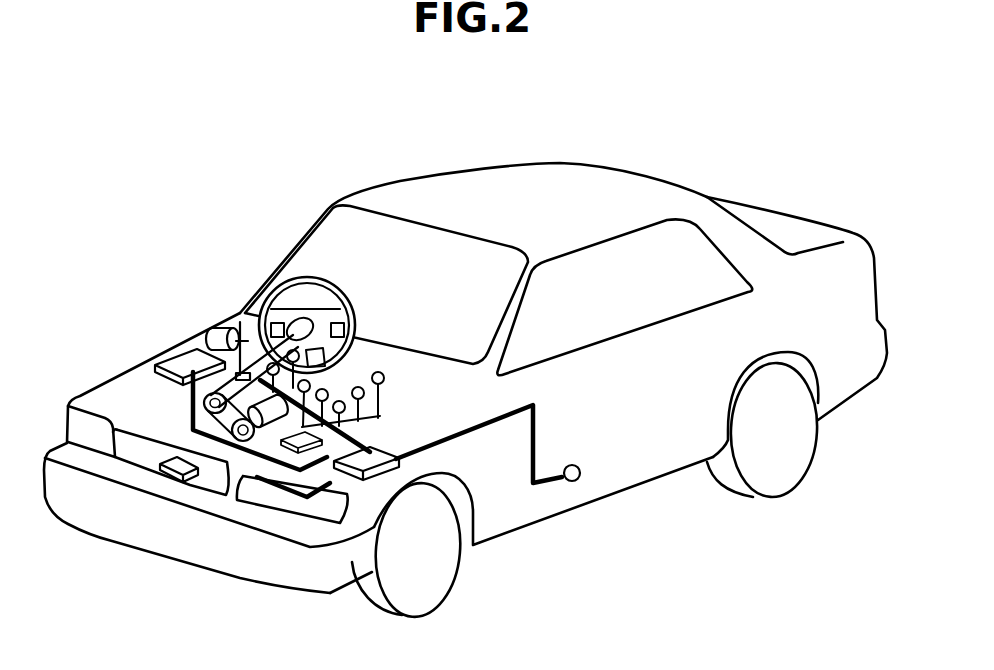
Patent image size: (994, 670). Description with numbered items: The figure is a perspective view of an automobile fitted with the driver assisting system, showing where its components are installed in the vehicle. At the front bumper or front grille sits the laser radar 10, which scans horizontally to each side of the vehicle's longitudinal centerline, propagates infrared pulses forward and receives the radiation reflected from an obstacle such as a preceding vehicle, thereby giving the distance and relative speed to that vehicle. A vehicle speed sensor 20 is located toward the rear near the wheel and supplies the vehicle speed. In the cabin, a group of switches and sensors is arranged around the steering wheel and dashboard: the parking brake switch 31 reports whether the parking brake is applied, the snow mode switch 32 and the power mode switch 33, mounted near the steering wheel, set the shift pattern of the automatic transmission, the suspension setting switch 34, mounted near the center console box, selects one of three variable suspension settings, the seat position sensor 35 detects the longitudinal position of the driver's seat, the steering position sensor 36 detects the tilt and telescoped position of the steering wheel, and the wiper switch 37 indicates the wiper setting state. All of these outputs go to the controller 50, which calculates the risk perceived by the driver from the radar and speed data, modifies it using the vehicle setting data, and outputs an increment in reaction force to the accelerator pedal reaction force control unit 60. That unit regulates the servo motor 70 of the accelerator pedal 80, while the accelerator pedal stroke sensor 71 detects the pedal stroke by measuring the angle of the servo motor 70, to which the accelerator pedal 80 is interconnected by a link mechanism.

The laser radar 10 is at (180, 476).
The vehicle speed sensor 20 is at (573, 481).
The parking brake switch 31 is at (365, 394).
The snow mode switch 32 is at (308, 380).
The power mode switch 33 is at (326, 389).
The suspension setting switch 34 is at (346, 408).
The seat position sensor 35 is at (383, 374).
The steering position sensor 36 is at (296, 338).
The wiper switch 37 is at (252, 318).
The controller 50 is at (372, 466).
The accelerator pedal reaction force control unit 60 is at (178, 360).
The servo motor 70 is at (162, 318).
The accelerator pedal stroke sensor 71 is at (205, 328).
The accelerator pedal 80 is at (203, 395).